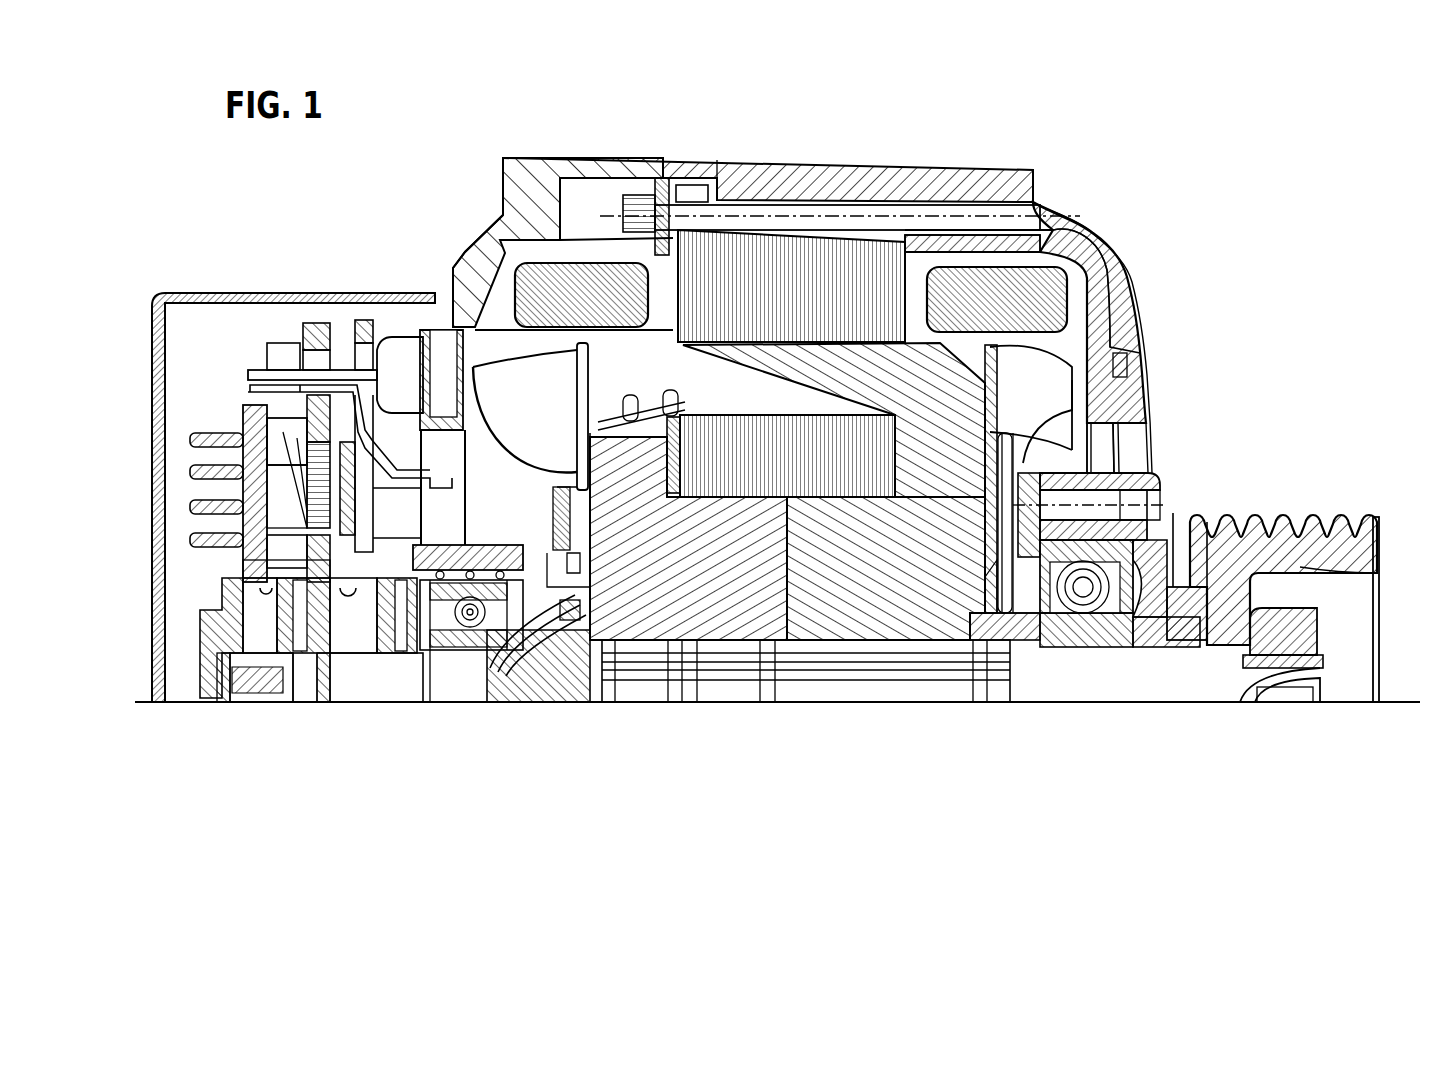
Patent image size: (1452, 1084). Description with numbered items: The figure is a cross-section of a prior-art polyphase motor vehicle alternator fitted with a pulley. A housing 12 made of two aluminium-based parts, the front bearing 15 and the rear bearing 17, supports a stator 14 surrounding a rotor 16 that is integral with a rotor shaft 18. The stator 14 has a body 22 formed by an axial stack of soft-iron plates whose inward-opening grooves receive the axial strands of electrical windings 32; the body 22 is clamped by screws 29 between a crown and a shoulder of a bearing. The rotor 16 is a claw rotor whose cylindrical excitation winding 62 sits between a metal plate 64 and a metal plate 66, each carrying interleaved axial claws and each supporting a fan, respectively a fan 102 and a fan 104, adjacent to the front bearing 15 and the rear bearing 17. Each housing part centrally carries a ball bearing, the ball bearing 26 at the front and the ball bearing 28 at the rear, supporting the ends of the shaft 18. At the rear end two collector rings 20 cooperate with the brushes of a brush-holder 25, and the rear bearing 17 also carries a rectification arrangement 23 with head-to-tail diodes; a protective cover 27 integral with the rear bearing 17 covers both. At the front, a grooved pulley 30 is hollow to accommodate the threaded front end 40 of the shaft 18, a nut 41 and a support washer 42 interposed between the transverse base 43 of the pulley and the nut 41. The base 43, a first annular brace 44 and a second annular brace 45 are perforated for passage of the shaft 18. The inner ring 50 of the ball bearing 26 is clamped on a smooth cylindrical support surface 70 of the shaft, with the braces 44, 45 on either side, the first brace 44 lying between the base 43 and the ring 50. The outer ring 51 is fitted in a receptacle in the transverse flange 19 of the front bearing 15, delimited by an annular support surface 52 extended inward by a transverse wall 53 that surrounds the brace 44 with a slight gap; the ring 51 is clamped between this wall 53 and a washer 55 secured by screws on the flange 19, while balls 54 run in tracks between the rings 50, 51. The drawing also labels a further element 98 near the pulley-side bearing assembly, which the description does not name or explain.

The housing 12 is at (493, 152).
The stator 14 is at (782, 212).
The front bearing 15 is at (1037, 190).
The rotor 16 is at (868, 648).
The rear bearing 17 is at (485, 230).
The rotor shaft 18 is at (731, 676).
The transverse flange 19 is at (1027, 447).
The collector rings 20 is at (297, 653).
The body 22 is at (832, 262).
The rectification arrangement 23 is at (255, 360).
The brush-holder 25 is at (327, 653).
The ball bearing 26 is at (1094, 655).
The protective cover 27 is at (283, 300).
The ball bearing 28 is at (447, 657).
The screws 29 is at (931, 210).
The pulley 30 is at (1295, 520).
The electrical windings 32 is at (1040, 213).
The threaded front end 40 is at (1325, 650).
The nut 41 is at (1300, 675).
The support washer 42 is at (1290, 630).
The transverse base 43 is at (1200, 650).
The first annular brace 44 is at (1175, 520).
The second annular brace 45 is at (993, 630).
The inner ring 50 is at (1095, 600).
The outer ring 51 is at (985, 555).
The annular support surface 52 is at (1097, 567).
The transverse wall 53 is at (1187, 625).
The balls 54 is at (1082, 647).
The washer 55 is at (1090, 425).
The electrical winding 62 is at (710, 465).
The metal plate 64 is at (947, 382).
The metal plate 66 is at (612, 485).
The smooth cylindrical support surface 70 is at (1035, 647).
The spacer 98 is at (1160, 648).
The fan 102 is at (1040, 377).
The fan 104 is at (523, 388).